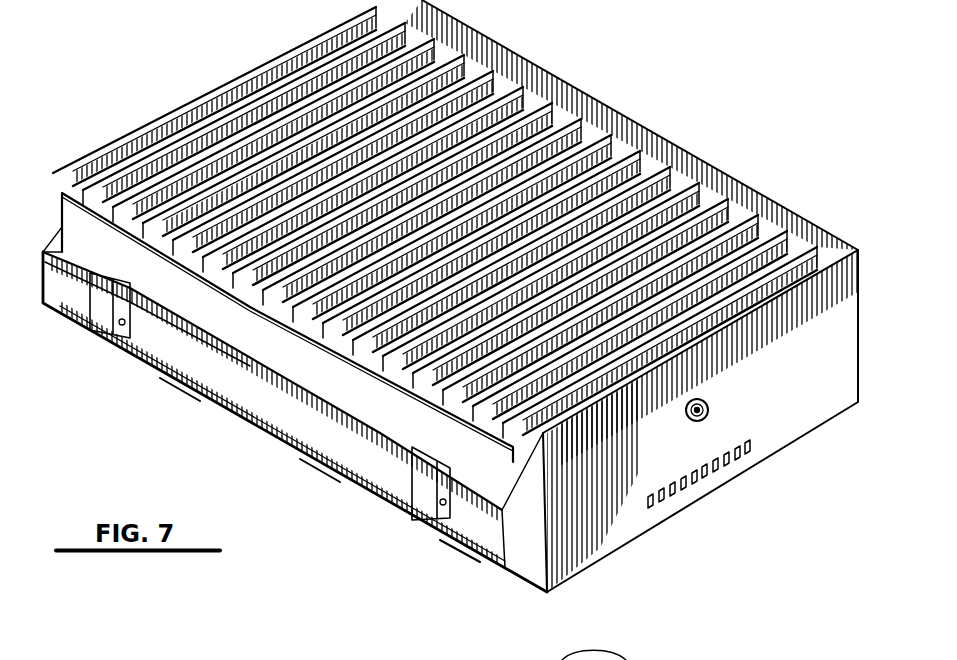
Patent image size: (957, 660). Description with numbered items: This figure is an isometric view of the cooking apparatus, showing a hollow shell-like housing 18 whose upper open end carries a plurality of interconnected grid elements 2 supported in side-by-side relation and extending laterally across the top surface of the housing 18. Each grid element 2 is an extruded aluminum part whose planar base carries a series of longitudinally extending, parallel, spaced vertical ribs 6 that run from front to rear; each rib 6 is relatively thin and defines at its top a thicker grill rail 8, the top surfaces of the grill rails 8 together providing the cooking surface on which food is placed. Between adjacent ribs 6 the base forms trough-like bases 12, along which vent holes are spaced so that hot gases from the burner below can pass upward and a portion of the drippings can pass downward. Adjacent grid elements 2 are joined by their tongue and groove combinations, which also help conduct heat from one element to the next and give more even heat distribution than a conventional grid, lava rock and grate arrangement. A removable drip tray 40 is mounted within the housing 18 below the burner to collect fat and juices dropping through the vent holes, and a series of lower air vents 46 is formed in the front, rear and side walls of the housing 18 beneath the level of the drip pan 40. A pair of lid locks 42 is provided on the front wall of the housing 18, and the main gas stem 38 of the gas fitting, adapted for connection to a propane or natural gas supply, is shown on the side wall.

The grid element 2 is at (278, 52).
The vertical rib 6 is at (463, 45).
The grill rail 8 is at (147, 143).
The trough-like base 12 is at (163, 240).
The housing 18 is at (793, 422).
The main gas stem 38 is at (708, 408).
The drip tray 40 is at (282, 350).
The lid lock 42 is at (105, 320).
The lower air vent 46 is at (172, 383).